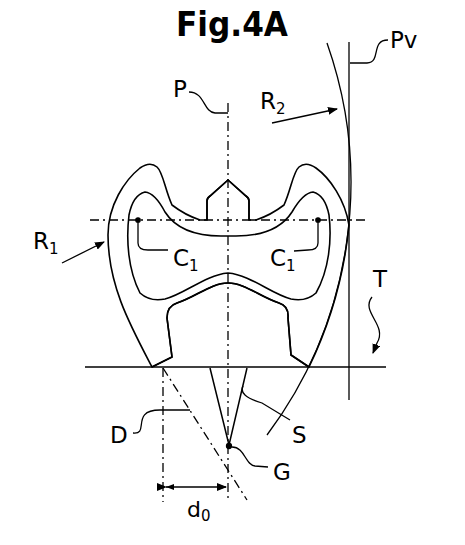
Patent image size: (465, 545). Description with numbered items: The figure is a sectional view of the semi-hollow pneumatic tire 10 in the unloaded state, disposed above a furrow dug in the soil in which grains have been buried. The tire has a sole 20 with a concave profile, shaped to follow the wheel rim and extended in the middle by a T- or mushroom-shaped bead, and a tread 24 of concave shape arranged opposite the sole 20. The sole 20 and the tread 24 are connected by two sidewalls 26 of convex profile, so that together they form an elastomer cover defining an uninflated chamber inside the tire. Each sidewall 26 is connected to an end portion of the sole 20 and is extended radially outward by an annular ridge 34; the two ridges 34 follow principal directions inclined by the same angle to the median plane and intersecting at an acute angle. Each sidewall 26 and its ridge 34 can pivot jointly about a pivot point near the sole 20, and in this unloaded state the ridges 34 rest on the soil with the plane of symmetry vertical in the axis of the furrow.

The semi-hollow pneumatic tire 10 is at (107, 188).
The sole 20 is at (200, 226).
The tread 24 is at (248, 290).
The sidewall 26 is at (125, 262).
The annular ridge 34 is at (153, 347).